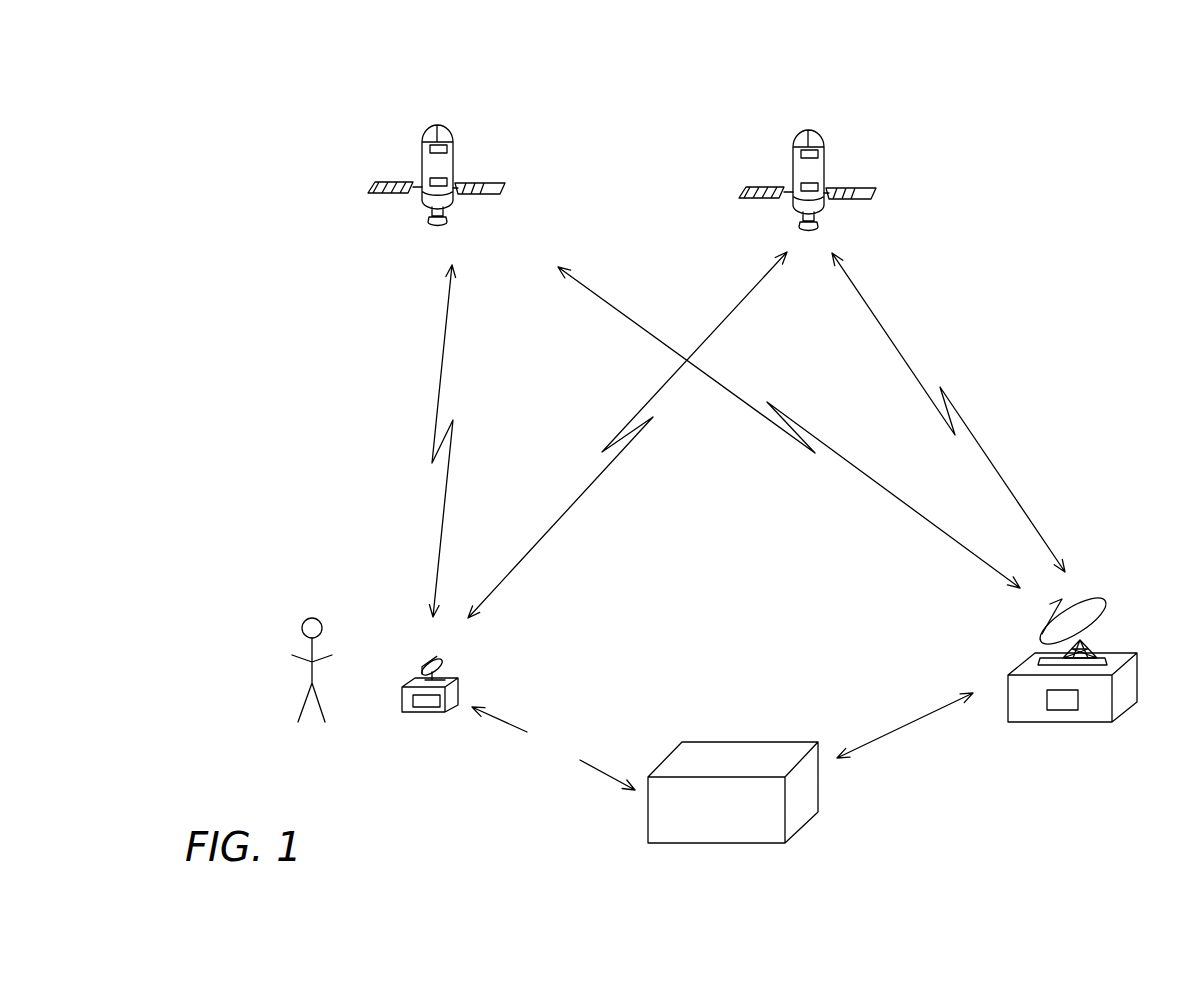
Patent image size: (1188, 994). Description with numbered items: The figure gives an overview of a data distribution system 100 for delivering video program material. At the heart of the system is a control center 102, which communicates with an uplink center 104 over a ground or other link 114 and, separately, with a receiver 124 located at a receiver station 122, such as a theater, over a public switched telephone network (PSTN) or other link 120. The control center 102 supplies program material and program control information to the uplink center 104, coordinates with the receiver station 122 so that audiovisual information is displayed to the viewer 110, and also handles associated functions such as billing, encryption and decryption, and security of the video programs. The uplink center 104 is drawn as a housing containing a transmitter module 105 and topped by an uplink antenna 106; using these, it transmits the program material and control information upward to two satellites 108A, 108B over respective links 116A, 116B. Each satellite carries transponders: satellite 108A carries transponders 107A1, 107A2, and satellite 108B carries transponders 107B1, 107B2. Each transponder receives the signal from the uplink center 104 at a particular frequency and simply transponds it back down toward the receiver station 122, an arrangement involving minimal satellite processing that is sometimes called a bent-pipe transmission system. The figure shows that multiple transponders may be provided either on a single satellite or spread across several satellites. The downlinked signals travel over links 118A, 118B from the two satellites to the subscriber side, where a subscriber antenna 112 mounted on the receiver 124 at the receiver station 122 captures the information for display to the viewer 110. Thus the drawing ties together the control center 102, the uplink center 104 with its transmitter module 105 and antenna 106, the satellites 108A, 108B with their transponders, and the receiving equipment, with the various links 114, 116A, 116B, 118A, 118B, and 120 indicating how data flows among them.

The data distribution system 100 is at (1117, 373).
The control center 102 is at (805, 828).
The uplink center 104 is at (1075, 662).
The transmitter module 105 is at (1080, 708).
The uplink antenna 106 is at (1110, 605).
The transponder 107A1 is at (437, 128).
The transponder 107A2 is at (438, 178).
The transponder 107B1 is at (808, 133).
The transponder 107B2 is at (809, 183).
The satellite 108A is at (480, 194).
The satellite 108B is at (850, 199).
The viewer 110 is at (313, 602).
The subscriber antenna 112 is at (422, 685).
The ground link 114 is at (898, 728).
The link 116A is at (935, 525).
The link 116B is at (893, 343).
The link 118A is at (440, 548).
The link 118B is at (562, 510).
The public switched telephone network link 120 is at (580, 730).
The receiver station 122 is at (410, 712).
The receiver 124 is at (435, 707).